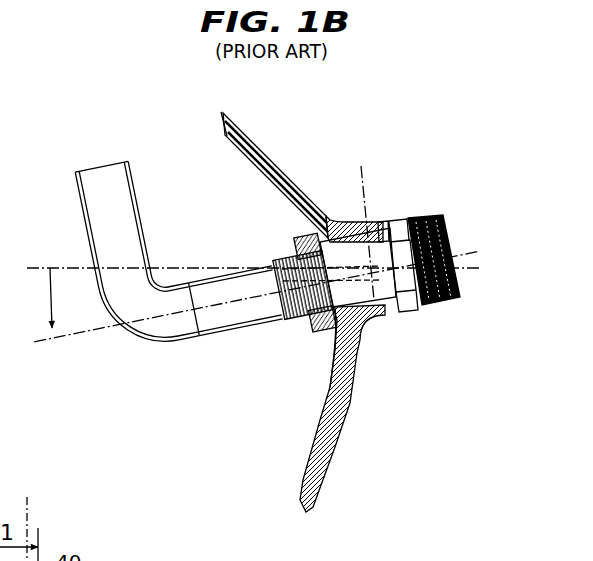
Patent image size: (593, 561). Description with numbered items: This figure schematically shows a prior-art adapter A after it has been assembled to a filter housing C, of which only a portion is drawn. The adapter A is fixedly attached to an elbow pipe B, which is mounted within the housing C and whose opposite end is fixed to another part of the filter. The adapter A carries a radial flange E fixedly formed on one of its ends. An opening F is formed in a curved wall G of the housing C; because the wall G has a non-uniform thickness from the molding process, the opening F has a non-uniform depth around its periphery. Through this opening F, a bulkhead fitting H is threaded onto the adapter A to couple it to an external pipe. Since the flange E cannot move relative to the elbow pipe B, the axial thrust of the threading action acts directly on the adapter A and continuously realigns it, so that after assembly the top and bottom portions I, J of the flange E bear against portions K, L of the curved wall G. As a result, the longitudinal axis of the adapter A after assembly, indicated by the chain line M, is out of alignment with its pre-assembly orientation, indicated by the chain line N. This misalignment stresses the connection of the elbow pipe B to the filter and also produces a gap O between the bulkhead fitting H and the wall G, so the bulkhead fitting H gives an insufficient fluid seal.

The elbow pipe B is at (76, 191).
The alternating sequence indicating pre-assembly longitudinal axis N is at (76, 260).
The adapter A is at (199, 275).
The alternating sequence indicating post-assembly longitudinal axis M is at (73, 342).
The housing C is at (264, 139).
The curved wall G is at (278, 162).
The portion of the curved wall K is at (308, 231).
The top portion of the flange I is at (290, 245).
The opening F is at (339, 223).
The bulkhead fitting H is at (422, 211).
The gap O is at (400, 313).
The radial flange E is at (306, 329).
The bottom portion of the flange J is at (313, 334).
The portion of the curved wall L is at (330, 334).